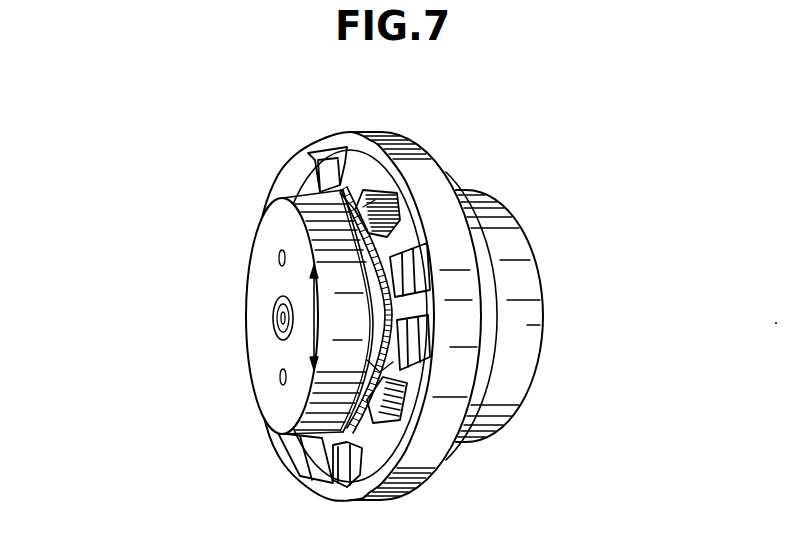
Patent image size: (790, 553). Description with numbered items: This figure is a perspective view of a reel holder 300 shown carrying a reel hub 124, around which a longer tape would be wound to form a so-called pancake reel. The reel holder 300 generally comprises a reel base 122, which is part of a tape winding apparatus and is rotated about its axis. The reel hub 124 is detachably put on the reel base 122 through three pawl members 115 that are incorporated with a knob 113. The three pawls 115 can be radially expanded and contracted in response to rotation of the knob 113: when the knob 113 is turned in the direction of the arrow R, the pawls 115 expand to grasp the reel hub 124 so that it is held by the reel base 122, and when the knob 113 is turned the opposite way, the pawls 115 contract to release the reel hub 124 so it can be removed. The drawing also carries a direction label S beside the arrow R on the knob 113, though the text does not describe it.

The reel holder 300 is at (187, 168).
The knob 113 is at (270, 236).
The pawl members 115 is at (318, 172).
The reel base 122 is at (487, 280).
The reel hub 124 is at (407, 157).
The stator direction indicator S is at (313, 285).
The arrow R is at (313, 347).